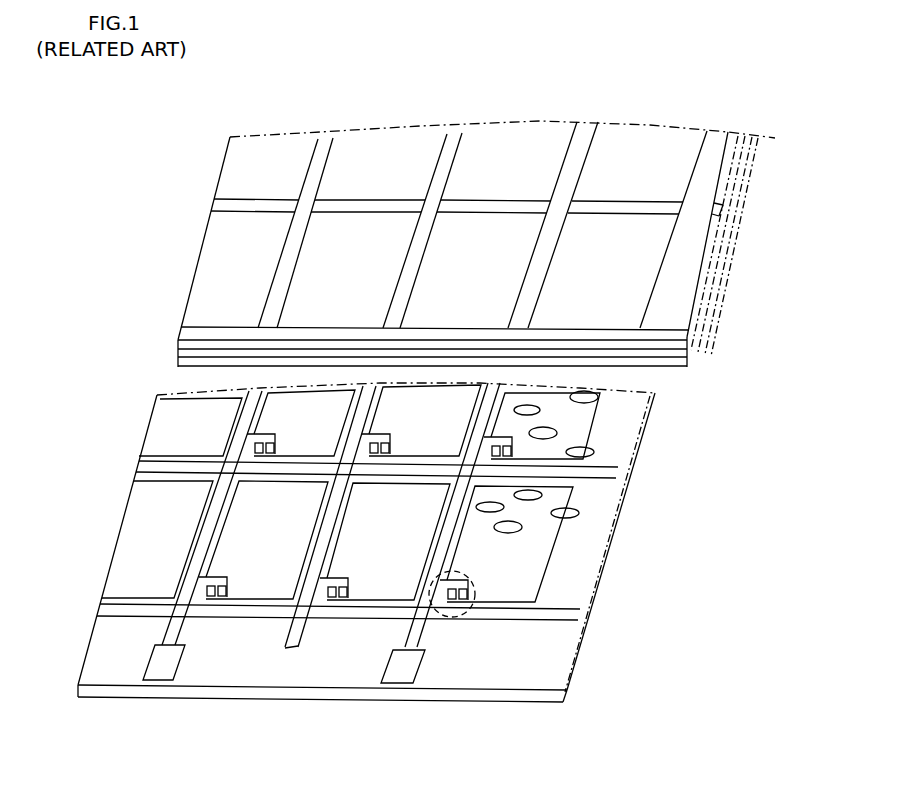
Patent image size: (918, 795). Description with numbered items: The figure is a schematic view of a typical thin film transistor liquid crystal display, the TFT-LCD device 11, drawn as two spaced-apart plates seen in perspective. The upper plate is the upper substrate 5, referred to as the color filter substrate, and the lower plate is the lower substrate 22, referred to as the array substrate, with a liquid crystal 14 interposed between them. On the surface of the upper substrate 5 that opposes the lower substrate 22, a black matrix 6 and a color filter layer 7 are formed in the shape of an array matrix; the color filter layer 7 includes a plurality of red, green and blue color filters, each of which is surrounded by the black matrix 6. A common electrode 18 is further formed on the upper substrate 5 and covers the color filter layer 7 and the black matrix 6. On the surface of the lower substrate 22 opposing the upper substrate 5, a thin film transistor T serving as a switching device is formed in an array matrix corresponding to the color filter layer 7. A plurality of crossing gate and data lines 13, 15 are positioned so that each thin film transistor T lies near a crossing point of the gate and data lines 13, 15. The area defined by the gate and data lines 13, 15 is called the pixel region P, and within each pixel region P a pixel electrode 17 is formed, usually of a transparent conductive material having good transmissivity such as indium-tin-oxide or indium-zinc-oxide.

The upper substrate 5 is at (692, 350).
The black matrix 6 is at (714, 210).
The color filter layer 7 is at (667, 255).
The common electrode 18 is at (688, 367).
The TFT-LCD device 11 is at (730, 581).
The gate line 13 is at (548, 618).
The liquid crystal 14 is at (569, 447).
The data line 15 is at (398, 643).
The pixel electrode 17 is at (553, 561).
The lower substrate 22 is at (536, 694).
The pixel region P is at (580, 547).
The thin film transistor T is at (470, 613).